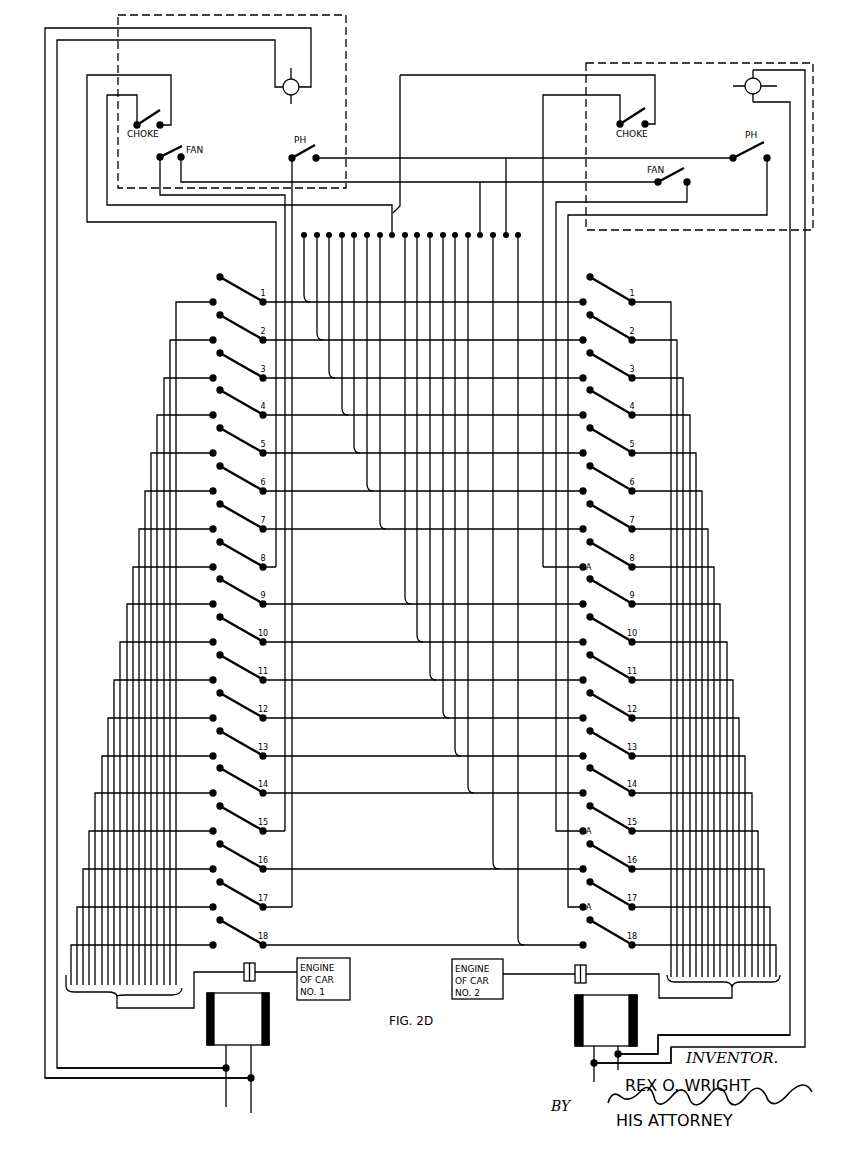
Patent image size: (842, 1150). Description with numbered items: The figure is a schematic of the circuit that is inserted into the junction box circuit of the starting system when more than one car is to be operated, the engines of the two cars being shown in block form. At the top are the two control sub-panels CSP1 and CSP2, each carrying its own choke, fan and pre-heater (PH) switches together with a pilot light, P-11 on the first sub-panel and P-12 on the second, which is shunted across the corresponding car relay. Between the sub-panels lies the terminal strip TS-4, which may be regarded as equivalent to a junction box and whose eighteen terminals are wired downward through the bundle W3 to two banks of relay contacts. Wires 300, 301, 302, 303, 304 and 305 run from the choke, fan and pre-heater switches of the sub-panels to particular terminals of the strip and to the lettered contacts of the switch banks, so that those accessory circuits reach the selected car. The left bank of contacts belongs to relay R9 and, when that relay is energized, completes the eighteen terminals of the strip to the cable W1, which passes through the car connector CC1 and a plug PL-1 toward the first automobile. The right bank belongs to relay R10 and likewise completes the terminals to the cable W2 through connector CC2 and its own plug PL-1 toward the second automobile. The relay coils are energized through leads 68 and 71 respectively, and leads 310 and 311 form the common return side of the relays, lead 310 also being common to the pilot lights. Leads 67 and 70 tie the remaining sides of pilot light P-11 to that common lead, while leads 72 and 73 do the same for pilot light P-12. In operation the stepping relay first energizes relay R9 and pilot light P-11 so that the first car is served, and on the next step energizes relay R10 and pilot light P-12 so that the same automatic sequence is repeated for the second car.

The wire from choke switch of CSP2 to terminal 8 300 is at (400, 120).
The wire from choke switch CSP2 to contact A of switch 8 301 is at (543, 130).
The wire between PH switches 302 is at (557, 158).
The wire from PH switch CSP2 to contact A of switch 17 303 is at (716, 215).
The wire from PH line to terminal 17 304 is at (512, 186).
The wire from FAN switch CSP2 to contact A of switch 15 305 is at (667, 203).
The wire 67 is at (137, 1067).
The lead 68 is at (225, 1090).
The lead 70 is at (104, 1077).
The lead 71 is at (592, 1064).
The lead 72 is at (640, 1063).
The lead 73 is at (733, 1034).
The common lead 310 is at (252, 1103).
The relay R10 output lead 311 is at (618, 1069).
The cable W1 is at (146, 500).
The cable W2 is at (704, 508).
The wire bundle from terminal strip TS-4 W3 is at (515, 280).
The control sub-panel CSP1 is at (348, 63).
The control sub-panel CSP2 is at (585, 70).
The terminal strip TS-4 is at (383, 230).
The car connector 1 CC1 is at (66, 995).
The car connector 2 CC2 is at (668, 964).
The plug PL-1 is at (255, 977).
The relay R9 is at (238, 1019).
The relay R10 is at (606, 1020).
The pilot light P-11 is at (304, 86).
The pilot light P-12 is at (745, 86).